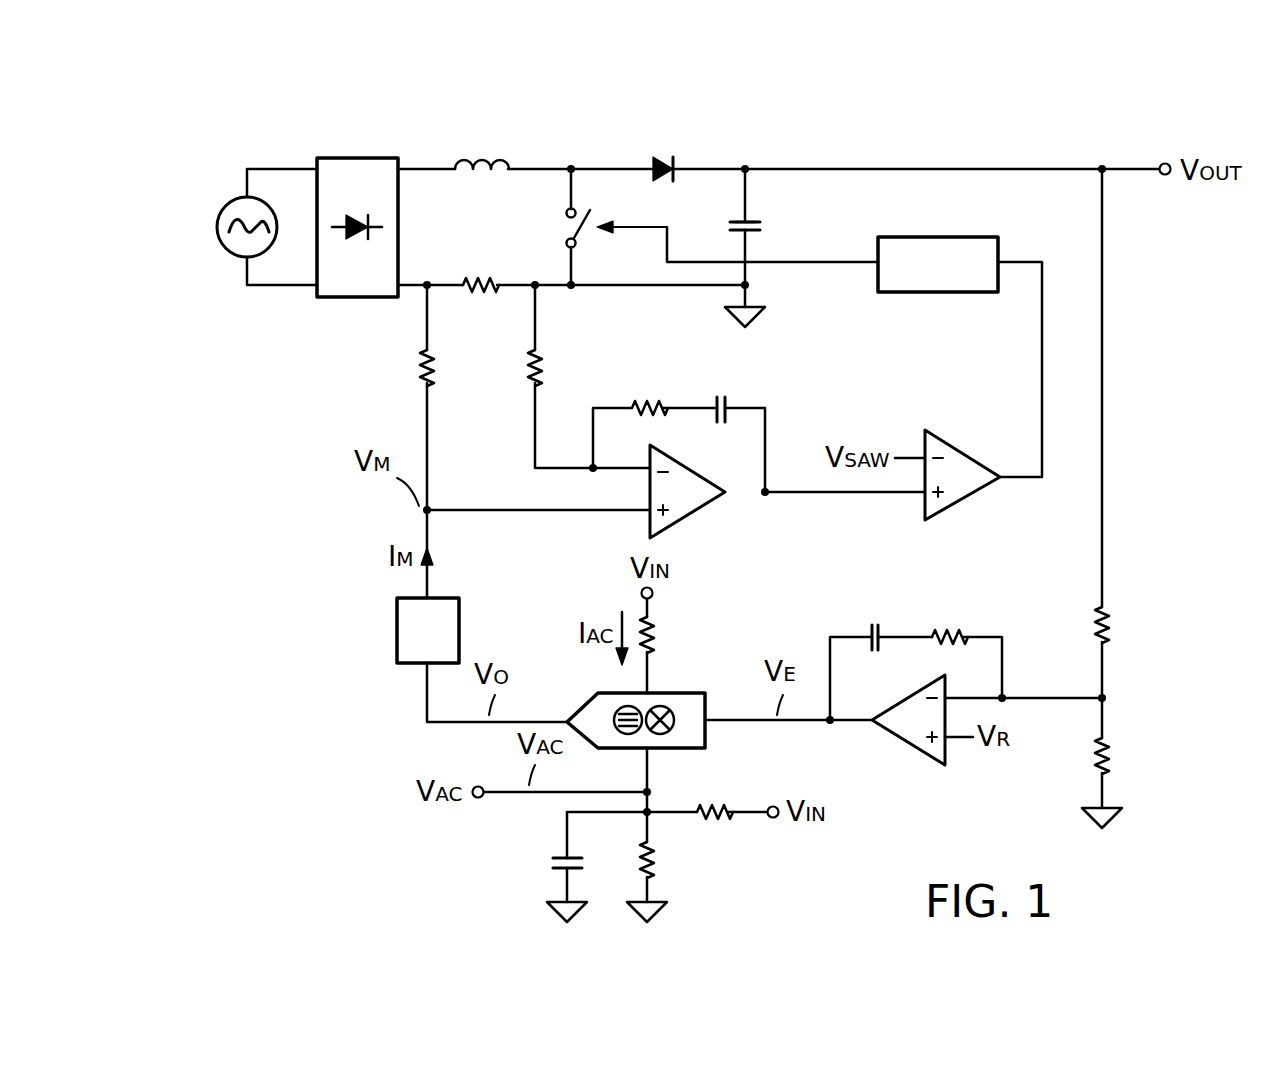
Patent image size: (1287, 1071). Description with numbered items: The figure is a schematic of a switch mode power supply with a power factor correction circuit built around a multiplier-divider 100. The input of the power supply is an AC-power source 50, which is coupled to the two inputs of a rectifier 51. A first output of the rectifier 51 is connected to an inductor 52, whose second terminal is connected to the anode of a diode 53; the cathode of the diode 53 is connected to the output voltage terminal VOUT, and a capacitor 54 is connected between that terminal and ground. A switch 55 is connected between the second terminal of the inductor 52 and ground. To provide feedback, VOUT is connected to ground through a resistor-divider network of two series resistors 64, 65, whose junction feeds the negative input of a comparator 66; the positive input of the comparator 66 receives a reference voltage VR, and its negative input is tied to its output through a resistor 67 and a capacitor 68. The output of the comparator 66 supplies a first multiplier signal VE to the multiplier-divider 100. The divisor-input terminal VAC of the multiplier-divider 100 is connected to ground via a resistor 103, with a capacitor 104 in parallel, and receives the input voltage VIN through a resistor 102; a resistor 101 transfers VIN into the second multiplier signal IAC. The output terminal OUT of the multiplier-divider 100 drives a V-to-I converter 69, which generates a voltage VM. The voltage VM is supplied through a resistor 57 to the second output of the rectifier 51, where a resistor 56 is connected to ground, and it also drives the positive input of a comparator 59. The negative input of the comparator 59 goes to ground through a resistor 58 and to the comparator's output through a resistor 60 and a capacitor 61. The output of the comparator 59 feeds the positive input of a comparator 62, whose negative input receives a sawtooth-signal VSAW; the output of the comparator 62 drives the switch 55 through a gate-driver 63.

The AC-power source 50 is at (214, 227).
The rectifier 51 is at (367, 158).
The inductor 52 is at (478, 160).
The diode 53 is at (662, 160).
The capacitor 54 is at (763, 225).
The switch 55 is at (556, 232).
The resistor 56 is at (479, 303).
The resistor 57 is at (412, 369).
The resistor 58 is at (527, 385).
The comparator 59 is at (695, 520).
The resistor 60 is at (645, 395).
The capacitor 61 is at (721, 395).
The comparator 62 is at (985, 497).
The gate-driver 63 is at (938, 297).
The resistor 64 is at (1118, 622).
The resistor 65 is at (1118, 748).
The comparator 66 is at (912, 757).
The resistor 67 is at (947, 616).
The capacitor 68 is at (876, 616).
The V-to-I converter 69 is at (390, 630).
The multiplier-divider 100 is at (583, 700).
The resistor 101 is at (664, 633).
The resistor 102 is at (718, 796).
The resistor 103 is at (660, 868).
The capacitor 104 is at (547, 864).